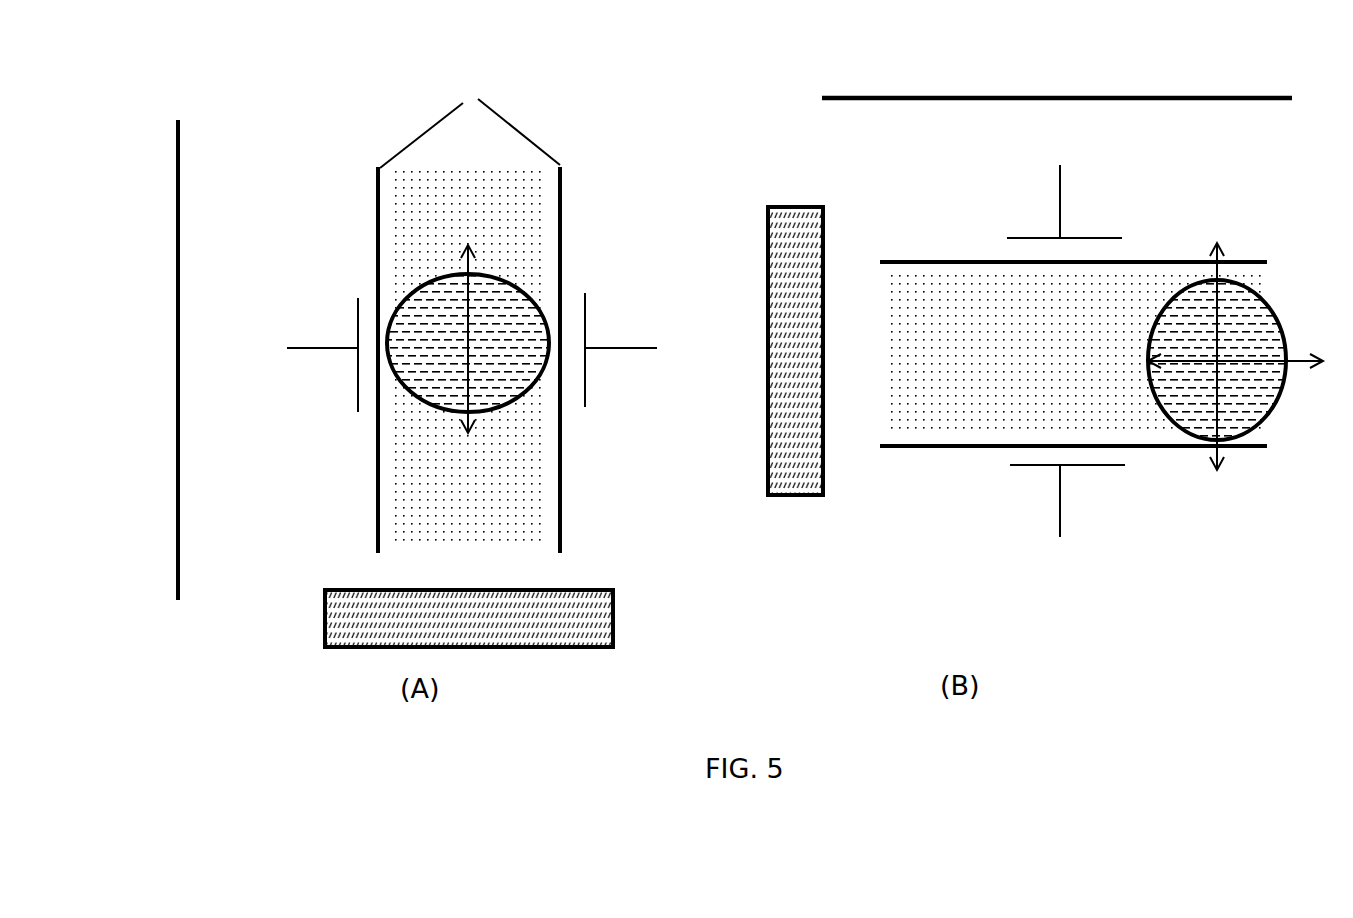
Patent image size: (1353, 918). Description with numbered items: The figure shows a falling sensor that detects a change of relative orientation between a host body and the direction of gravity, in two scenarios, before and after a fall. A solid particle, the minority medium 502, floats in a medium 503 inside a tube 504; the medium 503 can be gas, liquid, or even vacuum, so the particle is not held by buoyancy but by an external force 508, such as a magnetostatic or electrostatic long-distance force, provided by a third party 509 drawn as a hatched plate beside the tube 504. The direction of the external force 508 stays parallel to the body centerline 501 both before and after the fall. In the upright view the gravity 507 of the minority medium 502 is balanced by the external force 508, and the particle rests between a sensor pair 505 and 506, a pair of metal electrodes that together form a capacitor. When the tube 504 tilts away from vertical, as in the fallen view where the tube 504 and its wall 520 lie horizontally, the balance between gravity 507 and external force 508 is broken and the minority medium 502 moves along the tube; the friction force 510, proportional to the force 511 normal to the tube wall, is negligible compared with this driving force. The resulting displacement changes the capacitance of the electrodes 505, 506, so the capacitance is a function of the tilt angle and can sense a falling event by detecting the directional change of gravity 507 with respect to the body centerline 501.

The body centerline 501 is at (180, 165).
The minority medium 502 is at (432, 343).
The medium 503 is at (520, 425).
The tube 504 is at (468, 82).
The sensor electrode 505 is at (350, 353).
The sensor electrode 506 is at (615, 347).
The gravity 507 is at (465, 380).
The external force 508 is at (472, 258).
The third party 509 is at (515, 622).
The friction force 510 is at (1183, 362).
The normal force 511 is at (1218, 277).
The channel wall 520 is at (548, 120).